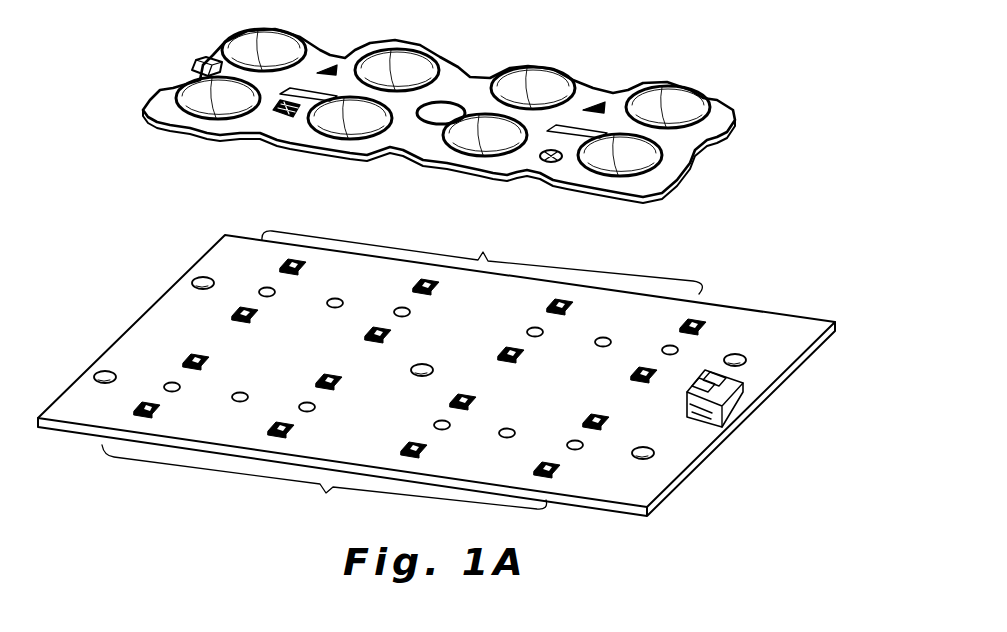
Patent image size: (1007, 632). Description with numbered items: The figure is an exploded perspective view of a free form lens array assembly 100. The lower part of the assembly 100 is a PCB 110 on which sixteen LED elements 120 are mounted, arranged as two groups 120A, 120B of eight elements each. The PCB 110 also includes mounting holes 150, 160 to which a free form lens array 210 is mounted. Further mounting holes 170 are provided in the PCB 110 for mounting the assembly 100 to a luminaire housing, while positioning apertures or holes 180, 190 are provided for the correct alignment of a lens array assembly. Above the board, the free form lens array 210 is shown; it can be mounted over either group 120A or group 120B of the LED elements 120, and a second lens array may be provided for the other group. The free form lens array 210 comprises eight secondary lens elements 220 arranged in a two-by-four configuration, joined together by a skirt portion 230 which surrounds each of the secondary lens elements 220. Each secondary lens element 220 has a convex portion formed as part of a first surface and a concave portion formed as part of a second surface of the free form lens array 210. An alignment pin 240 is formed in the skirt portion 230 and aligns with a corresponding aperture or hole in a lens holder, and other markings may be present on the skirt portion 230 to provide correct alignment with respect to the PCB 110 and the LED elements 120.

The free form lens array assembly 100 is at (744, 213).
The PCB 110 is at (752, 330).
The LED elements 120 is at (219, 309).
The first group of LED elements 120A is at (324, 486).
The second group of LED elements 120B is at (482, 259).
The mounting holes 150 is at (322, 320).
The mounting holes 160 is at (592, 353).
The mounting holes 170 is at (195, 281).
The positioning holes 180 is at (262, 289).
The positioning holes 190 is at (679, 350).
The free form lens array 210 is at (591, 61).
The secondary lens elements 220 is at (417, 60).
The skirt portion 230 is at (170, 115).
The alignment pin 240 is at (191, 59).